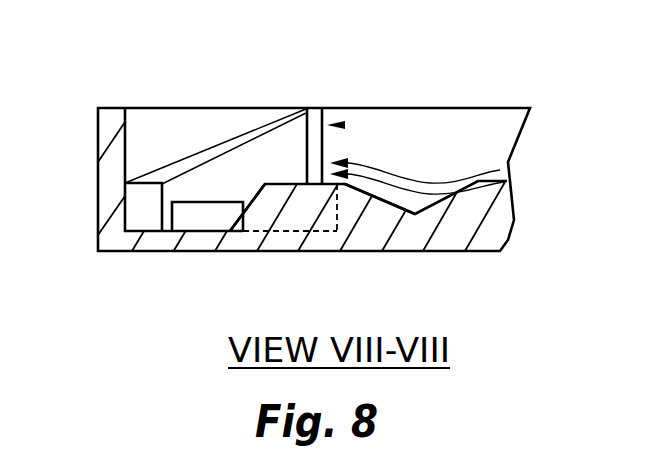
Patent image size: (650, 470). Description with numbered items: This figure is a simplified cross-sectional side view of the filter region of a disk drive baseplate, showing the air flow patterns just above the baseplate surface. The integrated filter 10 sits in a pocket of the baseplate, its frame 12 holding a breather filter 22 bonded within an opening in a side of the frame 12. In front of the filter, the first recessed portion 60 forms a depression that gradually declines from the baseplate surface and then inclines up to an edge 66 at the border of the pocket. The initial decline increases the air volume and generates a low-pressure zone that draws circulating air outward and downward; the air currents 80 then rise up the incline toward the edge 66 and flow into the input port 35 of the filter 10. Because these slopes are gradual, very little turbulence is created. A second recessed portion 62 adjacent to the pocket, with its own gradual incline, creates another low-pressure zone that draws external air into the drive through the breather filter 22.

The integrated filter 10 is at (262, 152).
The frame 12 is at (137, 205).
The breather filter 22 is at (196, 213).
The input port 35 is at (345, 125).
The first recessed portion 60 is at (452, 197).
The second recessed portion 62 is at (253, 200).
The edge 66 is at (340, 187).
The air currents 80 is at (483, 162).